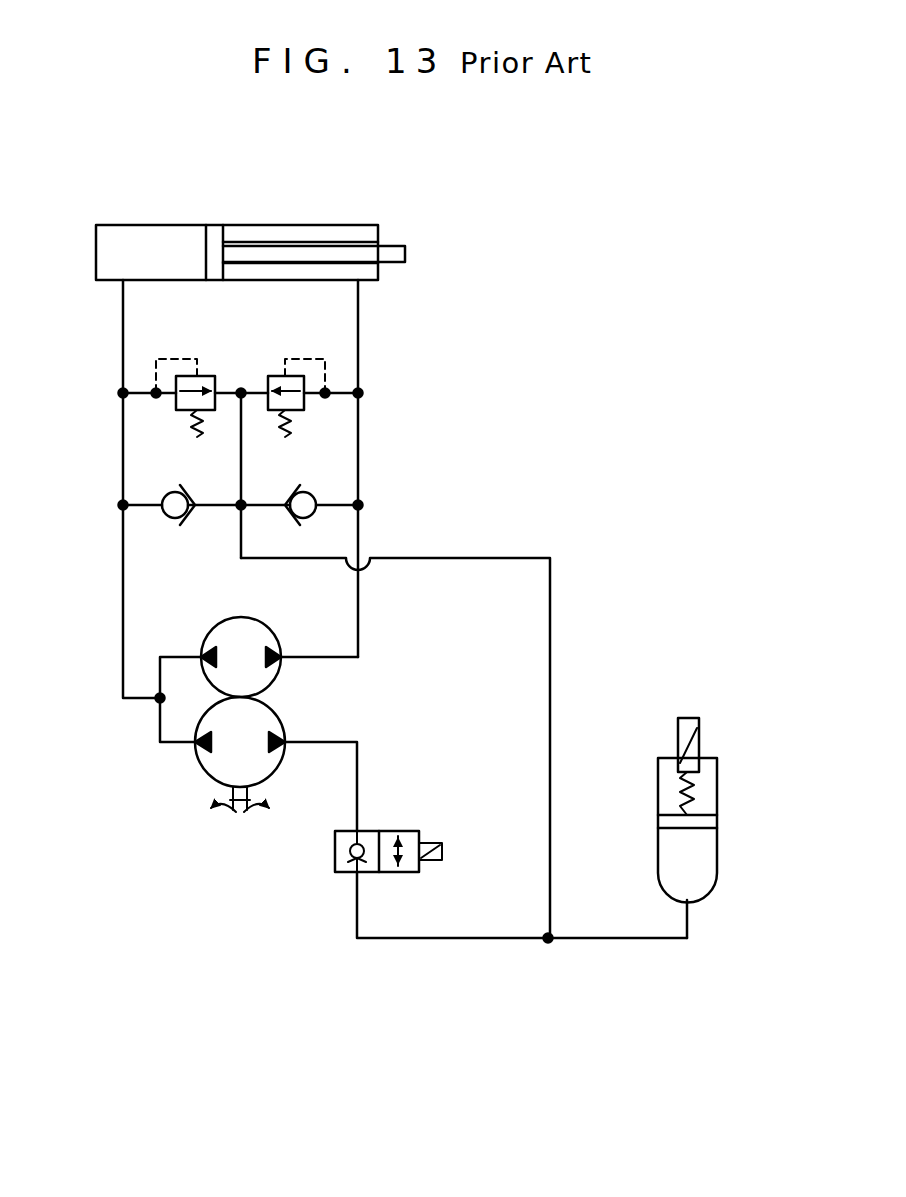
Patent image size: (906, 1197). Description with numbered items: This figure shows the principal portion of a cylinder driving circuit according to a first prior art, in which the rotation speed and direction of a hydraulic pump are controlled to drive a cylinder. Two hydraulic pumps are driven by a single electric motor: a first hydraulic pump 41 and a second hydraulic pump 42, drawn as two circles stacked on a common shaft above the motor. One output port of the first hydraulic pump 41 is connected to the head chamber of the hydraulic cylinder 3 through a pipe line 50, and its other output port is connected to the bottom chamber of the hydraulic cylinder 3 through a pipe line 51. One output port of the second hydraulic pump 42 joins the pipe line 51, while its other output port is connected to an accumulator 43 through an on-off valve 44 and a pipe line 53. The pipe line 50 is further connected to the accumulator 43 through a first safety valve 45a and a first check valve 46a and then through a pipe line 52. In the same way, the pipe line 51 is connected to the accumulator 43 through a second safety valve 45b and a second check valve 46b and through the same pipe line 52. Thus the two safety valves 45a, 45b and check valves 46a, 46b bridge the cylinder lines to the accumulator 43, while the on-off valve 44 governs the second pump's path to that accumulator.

The hydraulic cylinder 3 is at (292, 222).
The second safety valve 45b is at (207, 376).
The first safety valve 45a is at (276, 376).
The second check valve 46b is at (212, 480).
The first check valve 46a is at (298, 487).
The first hydraulic pump 41 is at (240, 618).
The second hydraulic pump 42 is at (499, 813).
The on-off valve 44 is at (403, 831).
The accumulator 43 is at (717, 842).
The pipe line 50 is at (358, 608).
The pipe line 51 is at (123, 638).
The pipe line 52 is at (550, 628).
The pipe line 53 is at (493, 938).